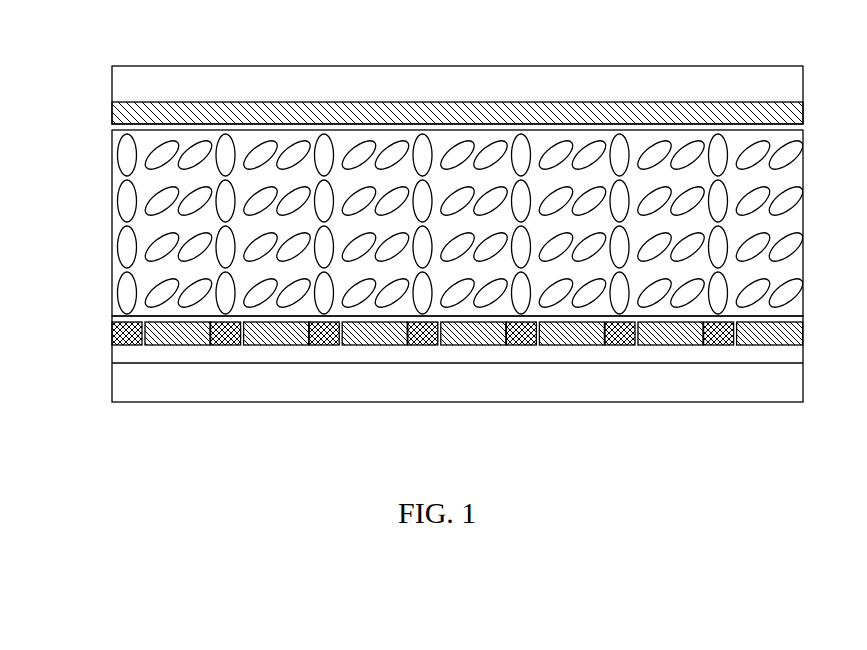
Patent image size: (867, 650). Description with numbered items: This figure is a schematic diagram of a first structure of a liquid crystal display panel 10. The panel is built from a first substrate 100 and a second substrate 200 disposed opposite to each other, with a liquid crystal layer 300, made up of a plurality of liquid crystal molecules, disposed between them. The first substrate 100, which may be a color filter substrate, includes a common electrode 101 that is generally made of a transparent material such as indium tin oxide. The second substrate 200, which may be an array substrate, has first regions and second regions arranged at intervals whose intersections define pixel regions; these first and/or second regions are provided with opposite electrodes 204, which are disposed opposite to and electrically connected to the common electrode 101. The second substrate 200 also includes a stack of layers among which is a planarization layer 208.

The liquid crystal display panel 10 is at (396, 33).
The first substrate 100 is at (103, 65).
The common electrode 101 is at (803, 110).
The liquid crystal layer 300 is at (110, 222).
The second substrate 200 is at (98, 316).
The opposite electrodes 204 is at (523, 345).
The planarization layer 208 is at (173, 345).